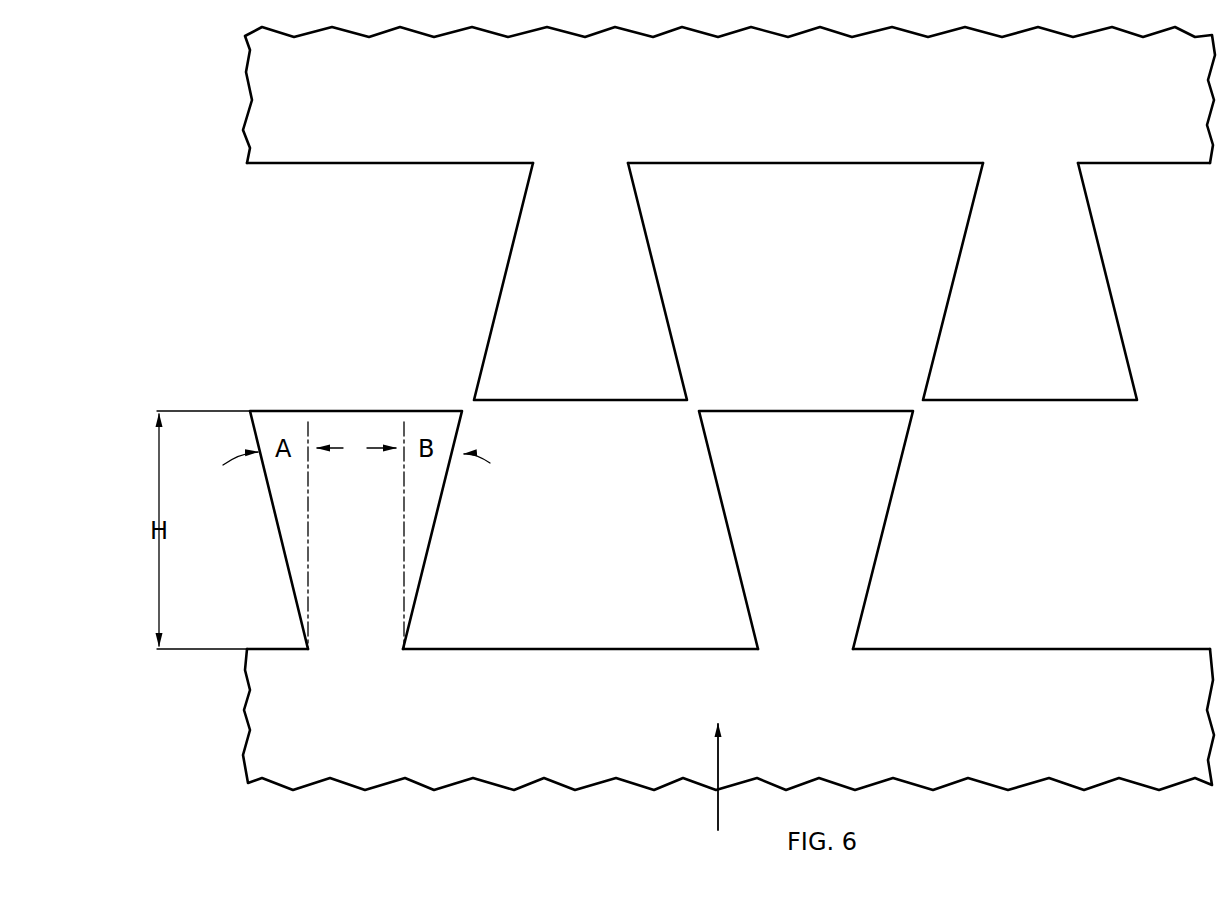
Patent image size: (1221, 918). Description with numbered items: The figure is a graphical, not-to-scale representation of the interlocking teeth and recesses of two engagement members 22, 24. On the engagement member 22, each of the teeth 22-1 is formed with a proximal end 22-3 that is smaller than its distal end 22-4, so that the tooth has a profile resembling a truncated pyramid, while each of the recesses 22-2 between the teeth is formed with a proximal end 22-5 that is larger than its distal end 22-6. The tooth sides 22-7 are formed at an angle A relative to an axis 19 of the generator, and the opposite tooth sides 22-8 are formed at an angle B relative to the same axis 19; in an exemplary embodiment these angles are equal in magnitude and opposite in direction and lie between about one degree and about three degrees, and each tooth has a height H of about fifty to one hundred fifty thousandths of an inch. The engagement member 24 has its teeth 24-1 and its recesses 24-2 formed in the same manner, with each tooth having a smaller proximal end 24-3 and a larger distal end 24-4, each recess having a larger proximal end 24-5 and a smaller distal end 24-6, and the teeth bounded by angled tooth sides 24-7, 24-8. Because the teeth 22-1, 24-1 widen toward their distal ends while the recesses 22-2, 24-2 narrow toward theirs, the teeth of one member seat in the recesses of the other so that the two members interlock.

The axis 19 is at (717, 801).
The engagement member 22 is at (210, 717).
The teeth 22-1 is at (384, 568).
The recesses 22-2 is at (543, 594).
The proximal end 22-3 is at (309, 650).
The distal end 22-4 is at (275, 410).
The proximal end 22-5 is at (608, 648).
The distal end 22-6 is at (463, 412).
The tooth sides 22-7 is at (279, 537).
The tooth sides 22-8 is at (441, 515).
The engagement member 24 is at (228, 89).
The teeth 24-1 is at (565, 246).
The recesses 24-2 is at (319, 208).
The proximal end 24-3 is at (1077, 162).
The distal end 24-4 is at (601, 401).
The proximal end 24-5 is at (385, 164).
The distal end 24-6 is at (473, 400).
The tooth sides 24-7 is at (497, 290).
The tooth sides 24-8 is at (666, 290).